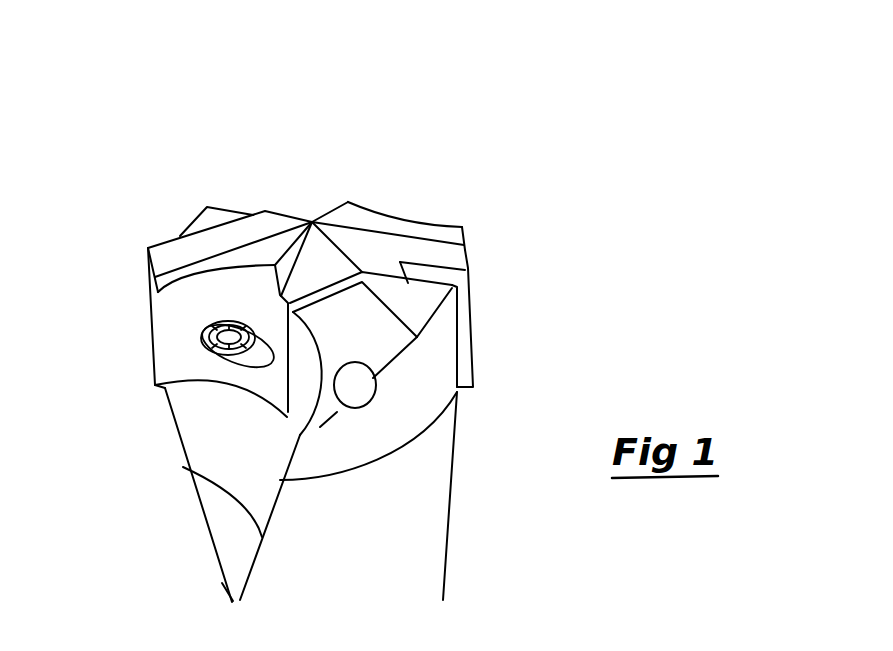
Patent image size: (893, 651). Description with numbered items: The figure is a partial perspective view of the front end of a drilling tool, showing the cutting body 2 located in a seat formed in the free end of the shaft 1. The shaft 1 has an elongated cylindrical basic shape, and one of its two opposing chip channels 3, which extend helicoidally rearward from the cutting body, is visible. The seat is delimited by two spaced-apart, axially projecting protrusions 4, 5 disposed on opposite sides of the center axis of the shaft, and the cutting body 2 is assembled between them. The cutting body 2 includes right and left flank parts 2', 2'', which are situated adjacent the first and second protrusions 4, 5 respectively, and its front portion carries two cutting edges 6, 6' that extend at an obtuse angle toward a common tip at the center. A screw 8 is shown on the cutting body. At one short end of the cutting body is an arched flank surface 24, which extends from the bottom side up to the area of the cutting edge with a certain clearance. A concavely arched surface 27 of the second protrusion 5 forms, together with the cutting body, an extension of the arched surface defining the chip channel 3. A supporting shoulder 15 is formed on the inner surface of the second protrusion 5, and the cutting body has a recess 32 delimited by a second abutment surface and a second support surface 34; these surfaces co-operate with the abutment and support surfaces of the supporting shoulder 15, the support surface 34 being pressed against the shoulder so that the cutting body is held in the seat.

The shaft 1 is at (450, 552).
The cutting body 2 is at (361, 351).
The right flank part 2' is at (238, 195).
The left flank part 2'' is at (411, 191).
The chip channel 3 is at (265, 516).
The first protrusion 4 is at (223, 208).
The second protrusion 5 is at (422, 400).
The cutting edge 6 is at (216, 233).
The cutting edge 6' is at (405, 195).
The screw 8 is at (238, 350).
The supporting shoulder 15 is at (435, 287).
The arched flank surface 24 is at (152, 323).
The concavely arched surface 27 is at (305, 438).
The recess 32 is at (471, 352).
The second support surface 34 is at (467, 289).